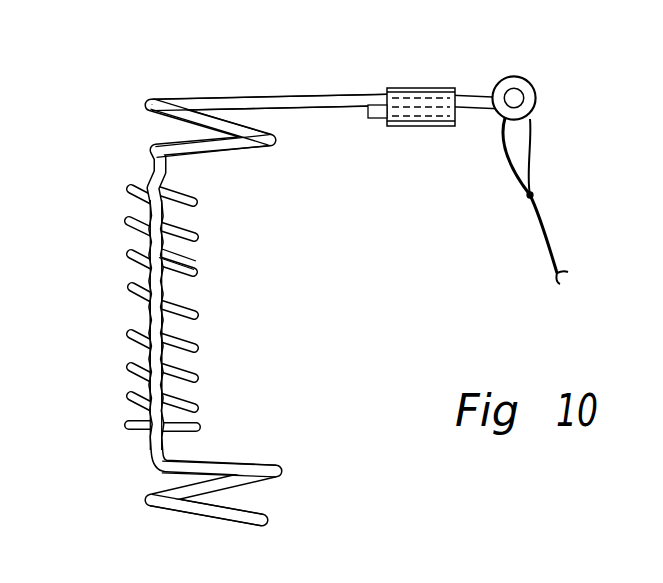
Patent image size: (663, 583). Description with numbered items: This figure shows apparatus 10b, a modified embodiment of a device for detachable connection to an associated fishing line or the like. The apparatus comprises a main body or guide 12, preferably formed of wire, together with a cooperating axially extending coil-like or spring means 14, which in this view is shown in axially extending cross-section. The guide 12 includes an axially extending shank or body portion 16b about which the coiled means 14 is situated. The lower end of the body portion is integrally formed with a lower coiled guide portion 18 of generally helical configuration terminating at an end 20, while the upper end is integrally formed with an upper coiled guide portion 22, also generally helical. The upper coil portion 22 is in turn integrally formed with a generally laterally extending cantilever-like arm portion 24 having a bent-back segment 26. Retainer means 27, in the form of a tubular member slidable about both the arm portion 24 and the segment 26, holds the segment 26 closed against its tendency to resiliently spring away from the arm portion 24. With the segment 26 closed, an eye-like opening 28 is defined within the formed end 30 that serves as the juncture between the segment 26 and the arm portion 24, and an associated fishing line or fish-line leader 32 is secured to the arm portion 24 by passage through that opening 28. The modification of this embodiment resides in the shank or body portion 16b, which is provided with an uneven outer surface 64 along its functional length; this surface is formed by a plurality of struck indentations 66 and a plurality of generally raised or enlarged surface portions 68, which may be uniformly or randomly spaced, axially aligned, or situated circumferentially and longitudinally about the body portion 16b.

The apparatus 10b is at (341, 302).
The main body or guide 12 is at (207, 83).
The coil-like or spring means 14 is at (197, 268).
The shank or body portion 16b is at (148, 352).
The lower coiled guide portion 18 is at (281, 468).
The end 20 is at (267, 522).
The upper coiled guide portion 22 is at (274, 146).
The cantilever-like arm portion 24 is at (307, 97).
The bent-back segment 26 is at (420, 118).
The retainer means 27 is at (412, 88).
The eye-like opening 28 is at (522, 77).
The formed end 30 is at (536, 95).
The fishing line or fish-line leader 32 is at (535, 227).
The uneven outer surface 64 is at (148, 300).
The indentations 66 is at (166, 185).
The raised surface portions 68 is at (135, 187).